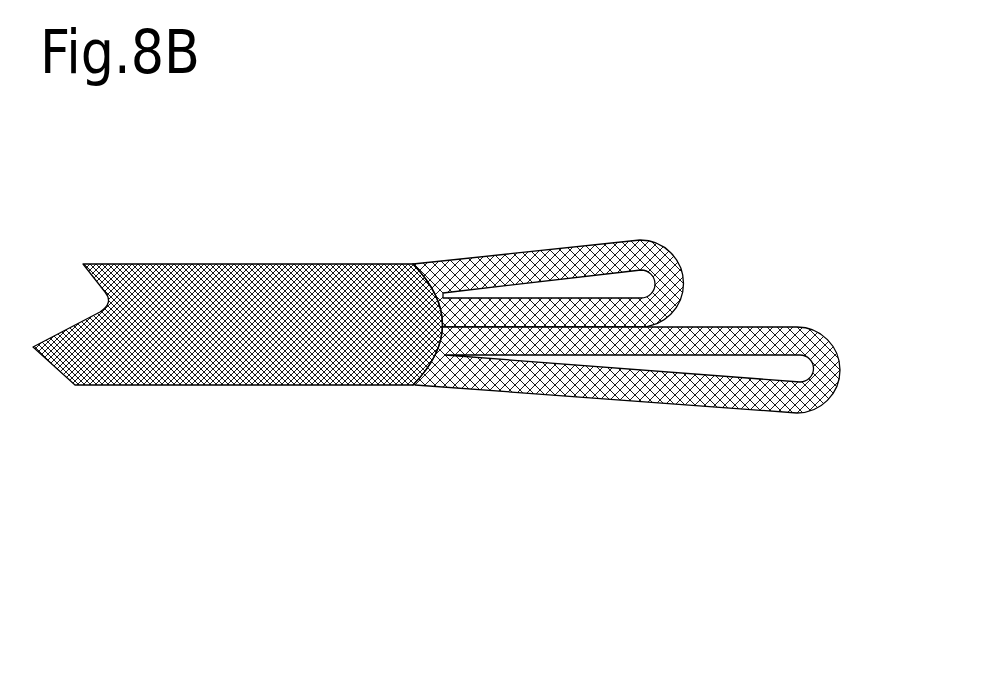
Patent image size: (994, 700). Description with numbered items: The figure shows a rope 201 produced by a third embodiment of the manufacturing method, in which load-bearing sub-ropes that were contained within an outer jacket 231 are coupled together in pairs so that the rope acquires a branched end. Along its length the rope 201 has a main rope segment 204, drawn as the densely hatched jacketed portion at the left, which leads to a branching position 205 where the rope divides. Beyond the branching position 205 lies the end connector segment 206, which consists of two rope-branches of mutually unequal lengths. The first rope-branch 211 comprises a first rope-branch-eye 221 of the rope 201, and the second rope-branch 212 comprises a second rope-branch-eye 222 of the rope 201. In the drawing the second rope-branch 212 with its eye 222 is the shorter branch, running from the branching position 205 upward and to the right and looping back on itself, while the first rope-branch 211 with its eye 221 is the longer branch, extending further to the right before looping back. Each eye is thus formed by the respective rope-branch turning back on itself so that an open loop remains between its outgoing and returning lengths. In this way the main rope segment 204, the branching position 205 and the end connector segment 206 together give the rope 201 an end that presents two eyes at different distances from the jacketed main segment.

The rope 201 is at (162, 206).
The outer jacket 231 is at (257, 262).
The main rope segment 204 is at (188, 538).
The branching position 205 is at (428, 419).
The end connector segment 206 is at (604, 568).
The second rope-branch 212 is at (496, 219).
The second rope-branch-eye 222 is at (548, 227).
The first rope-branch 211 is at (518, 428).
The first rope-branch-eye 221 is at (626, 429).